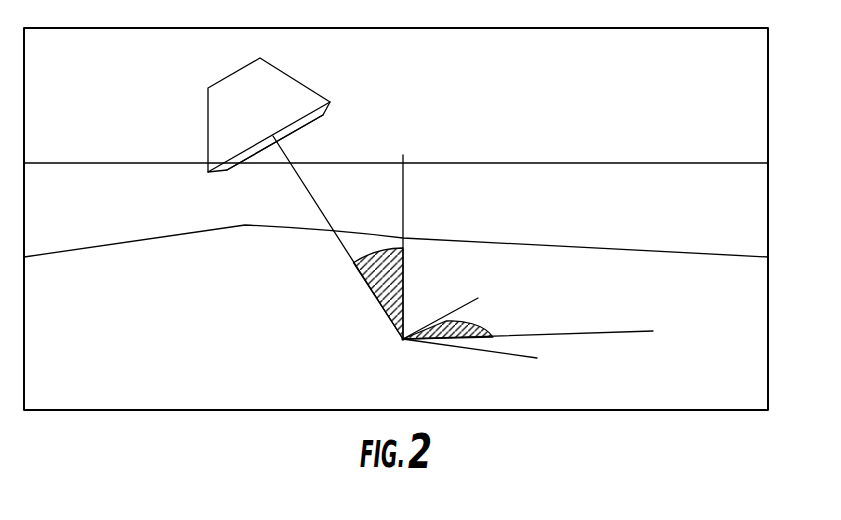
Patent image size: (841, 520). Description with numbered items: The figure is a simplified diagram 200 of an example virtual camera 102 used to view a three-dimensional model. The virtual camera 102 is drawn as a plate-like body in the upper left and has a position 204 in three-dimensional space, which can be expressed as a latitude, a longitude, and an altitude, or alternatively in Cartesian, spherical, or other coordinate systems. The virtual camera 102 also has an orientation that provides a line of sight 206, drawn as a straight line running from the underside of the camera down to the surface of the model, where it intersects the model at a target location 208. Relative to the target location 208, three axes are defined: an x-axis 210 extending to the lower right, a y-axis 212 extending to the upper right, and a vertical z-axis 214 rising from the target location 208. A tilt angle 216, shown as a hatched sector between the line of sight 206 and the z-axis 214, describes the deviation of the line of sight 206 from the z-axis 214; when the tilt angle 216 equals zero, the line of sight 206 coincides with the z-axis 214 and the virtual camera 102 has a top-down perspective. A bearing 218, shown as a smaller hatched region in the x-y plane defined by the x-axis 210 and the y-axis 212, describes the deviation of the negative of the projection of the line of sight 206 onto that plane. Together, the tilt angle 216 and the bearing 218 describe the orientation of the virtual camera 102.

The simplified diagram 200 is at (566, 113).
The virtual camera 102 is at (228, 112).
The position 204 is at (269, 150).
The line of sight 206 is at (325, 243).
The target location 208 is at (393, 349).
The x-axis 210 is at (545, 360).
The y-axis 212 is at (479, 291).
The z-axis 214 is at (411, 152).
The tilt angle 216 is at (375, 280).
The bearing 218 is at (455, 330).